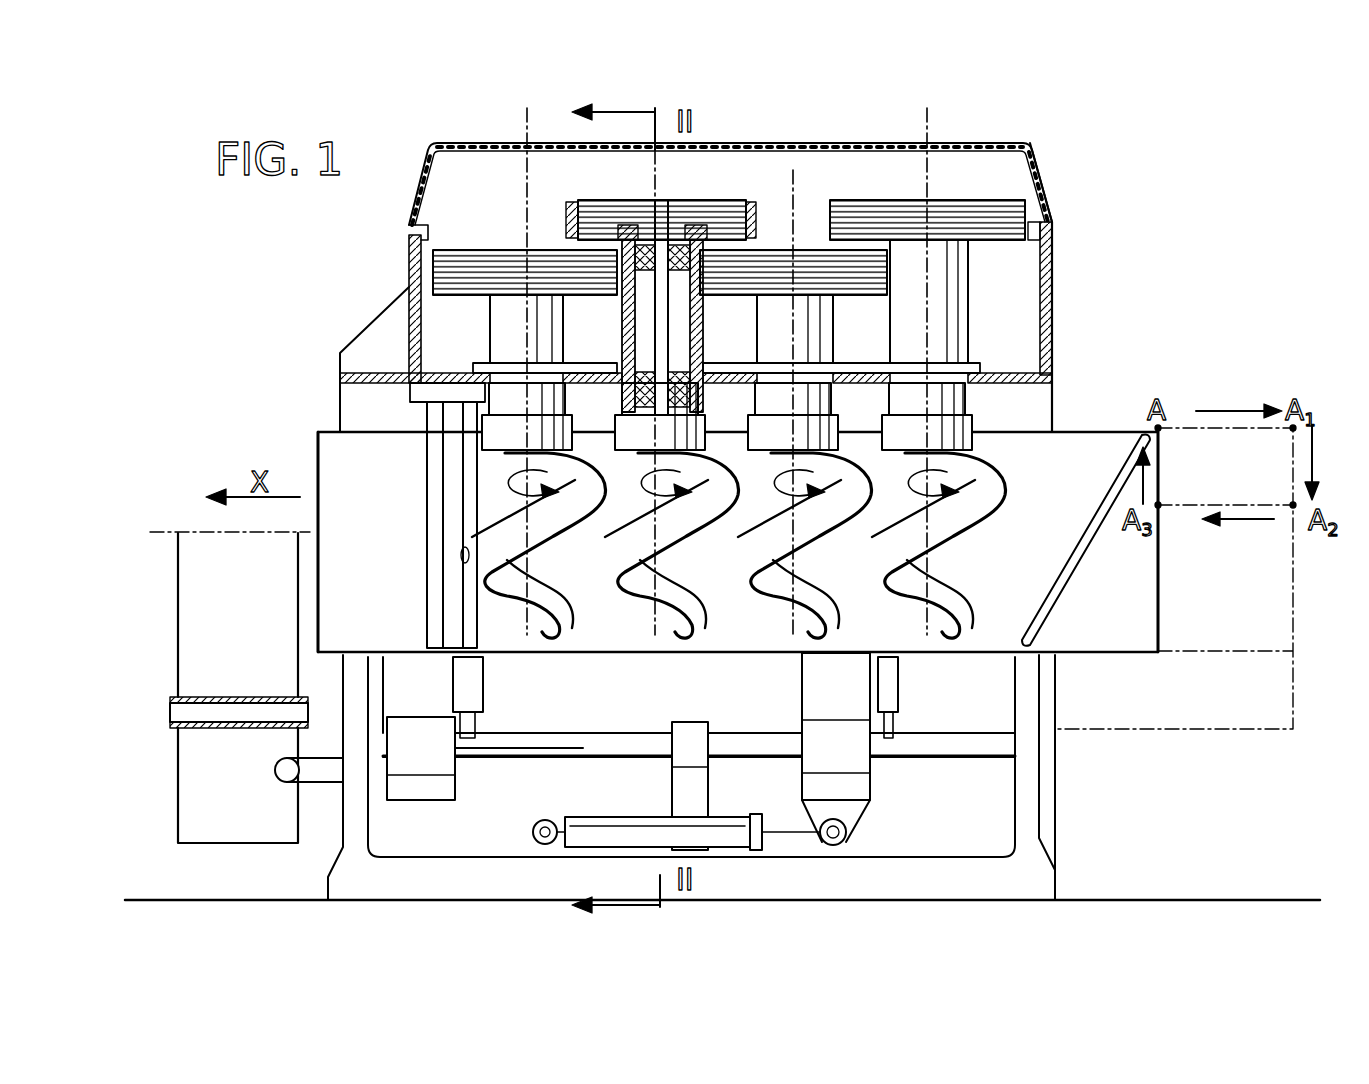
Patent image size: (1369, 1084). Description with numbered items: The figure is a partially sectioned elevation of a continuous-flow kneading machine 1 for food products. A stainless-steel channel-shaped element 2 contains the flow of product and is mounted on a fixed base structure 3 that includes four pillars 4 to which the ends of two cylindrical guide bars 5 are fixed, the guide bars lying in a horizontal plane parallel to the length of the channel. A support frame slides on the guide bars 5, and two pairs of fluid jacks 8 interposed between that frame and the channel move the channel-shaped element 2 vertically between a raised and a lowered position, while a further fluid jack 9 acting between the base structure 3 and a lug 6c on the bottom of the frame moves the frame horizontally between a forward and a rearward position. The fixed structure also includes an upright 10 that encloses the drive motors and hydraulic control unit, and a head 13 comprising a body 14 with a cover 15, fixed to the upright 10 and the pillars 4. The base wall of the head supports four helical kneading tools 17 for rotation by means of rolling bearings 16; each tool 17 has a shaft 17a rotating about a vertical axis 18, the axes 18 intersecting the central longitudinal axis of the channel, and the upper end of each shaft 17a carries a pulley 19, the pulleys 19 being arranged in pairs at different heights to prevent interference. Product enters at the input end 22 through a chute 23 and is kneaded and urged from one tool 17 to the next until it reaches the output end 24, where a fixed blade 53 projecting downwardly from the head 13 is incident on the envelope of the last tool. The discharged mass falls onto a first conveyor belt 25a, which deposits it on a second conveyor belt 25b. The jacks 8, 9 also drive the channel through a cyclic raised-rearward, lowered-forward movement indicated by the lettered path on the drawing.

The continuous-flow kneading machine 1 is at (298, 247).
The channel-shaped element 2 is at (1172, 632).
The fixed base structure 3 is at (1060, 882).
The pillars 4 is at (360, 830).
The cylindrical guide bars 5 is at (965, 742).
The lug 6c is at (855, 808).
The fluid jacks 8 is at (483, 688).
The fluid jack 9 is at (632, 828).
The upright 10 is at (1054, 392).
The head 13 is at (1042, 142).
The body 14 is at (1050, 280).
The cover 15 is at (1042, 180).
The rolling bearings 16 is at (700, 385).
The helical kneading tools 17 is at (540, 520).
The shaft 17a is at (660, 343).
The vertical axes 18 is at (527, 125).
The pulleys 19 is at (593, 212).
The input end 22 is at (1150, 560).
The chute 23 is at (1082, 548).
The output end 24 is at (345, 472).
The first conveyor belt 25a is at (322, 790).
The second conveyor belt 25b is at (230, 695).
The fixed blade 53 is at (440, 540).